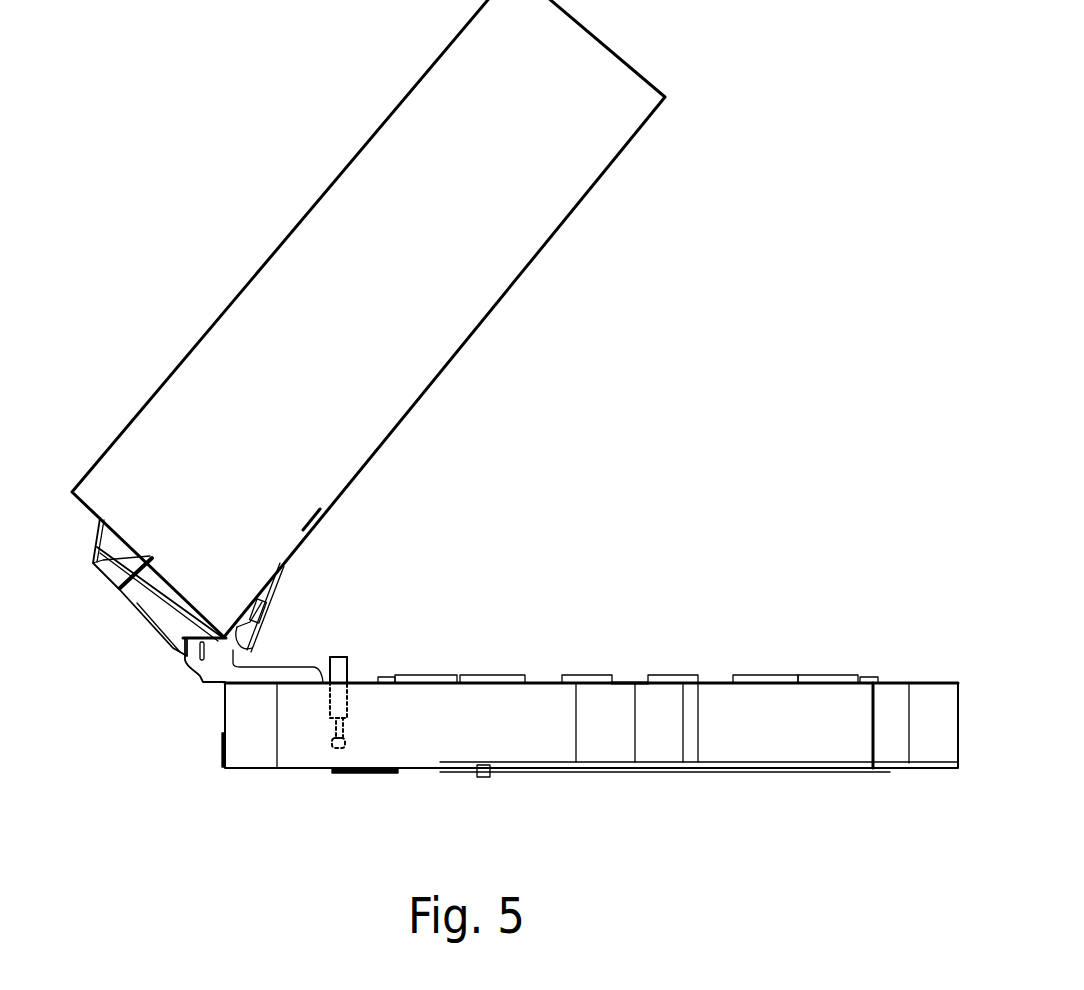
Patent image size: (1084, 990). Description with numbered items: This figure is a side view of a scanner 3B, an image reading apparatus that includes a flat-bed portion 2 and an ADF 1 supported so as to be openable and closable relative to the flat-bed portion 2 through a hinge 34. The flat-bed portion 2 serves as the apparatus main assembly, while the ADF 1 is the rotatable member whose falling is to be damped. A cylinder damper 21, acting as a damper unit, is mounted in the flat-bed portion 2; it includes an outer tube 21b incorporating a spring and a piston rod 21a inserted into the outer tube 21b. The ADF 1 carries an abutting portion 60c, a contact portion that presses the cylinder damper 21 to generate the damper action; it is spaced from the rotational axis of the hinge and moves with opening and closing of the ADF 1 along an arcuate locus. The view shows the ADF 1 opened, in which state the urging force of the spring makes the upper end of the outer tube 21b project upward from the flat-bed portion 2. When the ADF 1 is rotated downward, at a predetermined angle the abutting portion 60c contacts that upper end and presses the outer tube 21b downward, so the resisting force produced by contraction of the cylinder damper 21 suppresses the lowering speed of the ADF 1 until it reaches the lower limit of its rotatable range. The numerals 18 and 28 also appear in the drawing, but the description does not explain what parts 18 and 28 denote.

The ADF 1 is at (582, 232).
The flat-bed portion 2 is at (915, 668).
The scanner 3B is at (192, 125).
The cover 18 is at (483, 320).
The cylinder damper 21 is at (502, 600).
The piston rod 21a is at (347, 738).
The outer tube 21b is at (348, 667).
The housing recess 28 is at (628, 680).
The hinge 34 is at (200, 680).
The abutting portion 60c is at (303, 530).